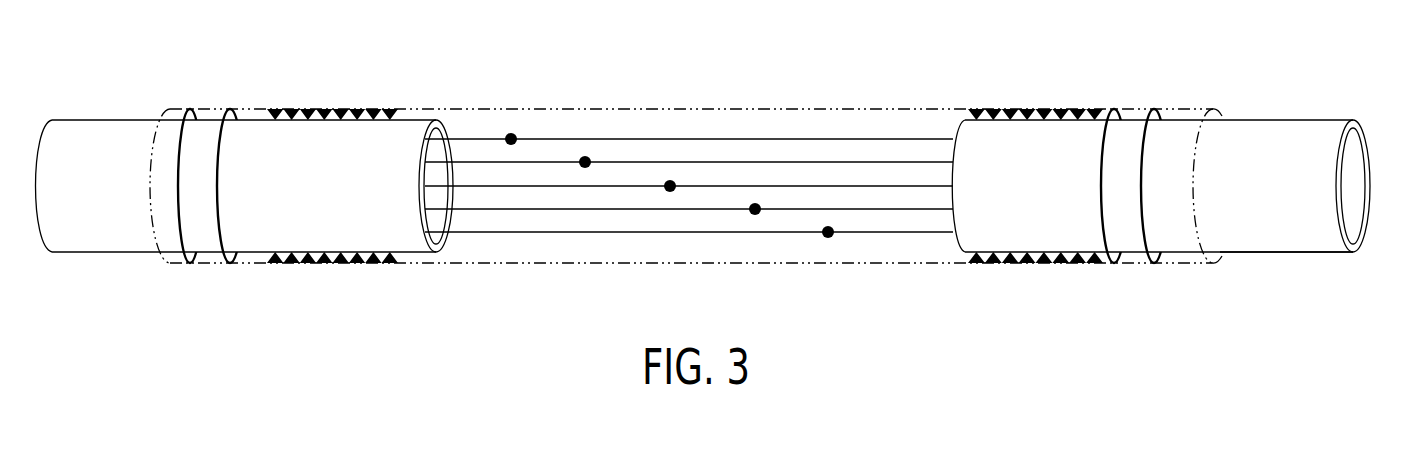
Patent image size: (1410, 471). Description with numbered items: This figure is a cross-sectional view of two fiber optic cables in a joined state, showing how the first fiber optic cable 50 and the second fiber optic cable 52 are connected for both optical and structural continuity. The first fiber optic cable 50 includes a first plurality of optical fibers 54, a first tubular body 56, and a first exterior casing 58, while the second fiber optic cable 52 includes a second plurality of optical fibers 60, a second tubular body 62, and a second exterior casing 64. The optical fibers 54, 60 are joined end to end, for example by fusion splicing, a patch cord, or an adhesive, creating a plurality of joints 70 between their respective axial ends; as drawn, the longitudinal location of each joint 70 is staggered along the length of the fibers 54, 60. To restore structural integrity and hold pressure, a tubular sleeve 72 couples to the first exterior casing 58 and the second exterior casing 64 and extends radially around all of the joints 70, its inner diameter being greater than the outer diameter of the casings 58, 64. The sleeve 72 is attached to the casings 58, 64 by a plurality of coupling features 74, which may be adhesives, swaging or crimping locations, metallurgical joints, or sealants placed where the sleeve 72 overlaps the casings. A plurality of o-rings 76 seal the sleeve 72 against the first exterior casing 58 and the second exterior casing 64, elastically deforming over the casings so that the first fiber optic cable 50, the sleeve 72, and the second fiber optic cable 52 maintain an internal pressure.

The first fiber optic cable 50 is at (253, 177).
The second fiber optic cable 52 is at (1178, 180).
The first plurality of optical fibers 54 is at (543, 187).
The first tubular body 56 is at (442, 121).
The first exterior casing 58 is at (68, 223).
The second plurality of optical fibers 60 is at (845, 139).
The second tubular body 62 is at (1366, 157).
The second exterior casing 64 is at (1286, 233).
The joints 70 is at (670, 192).
The sleeve 72 is at (628, 108).
The coupling features 74 is at (303, 265).
The o-rings 76 is at (232, 110).